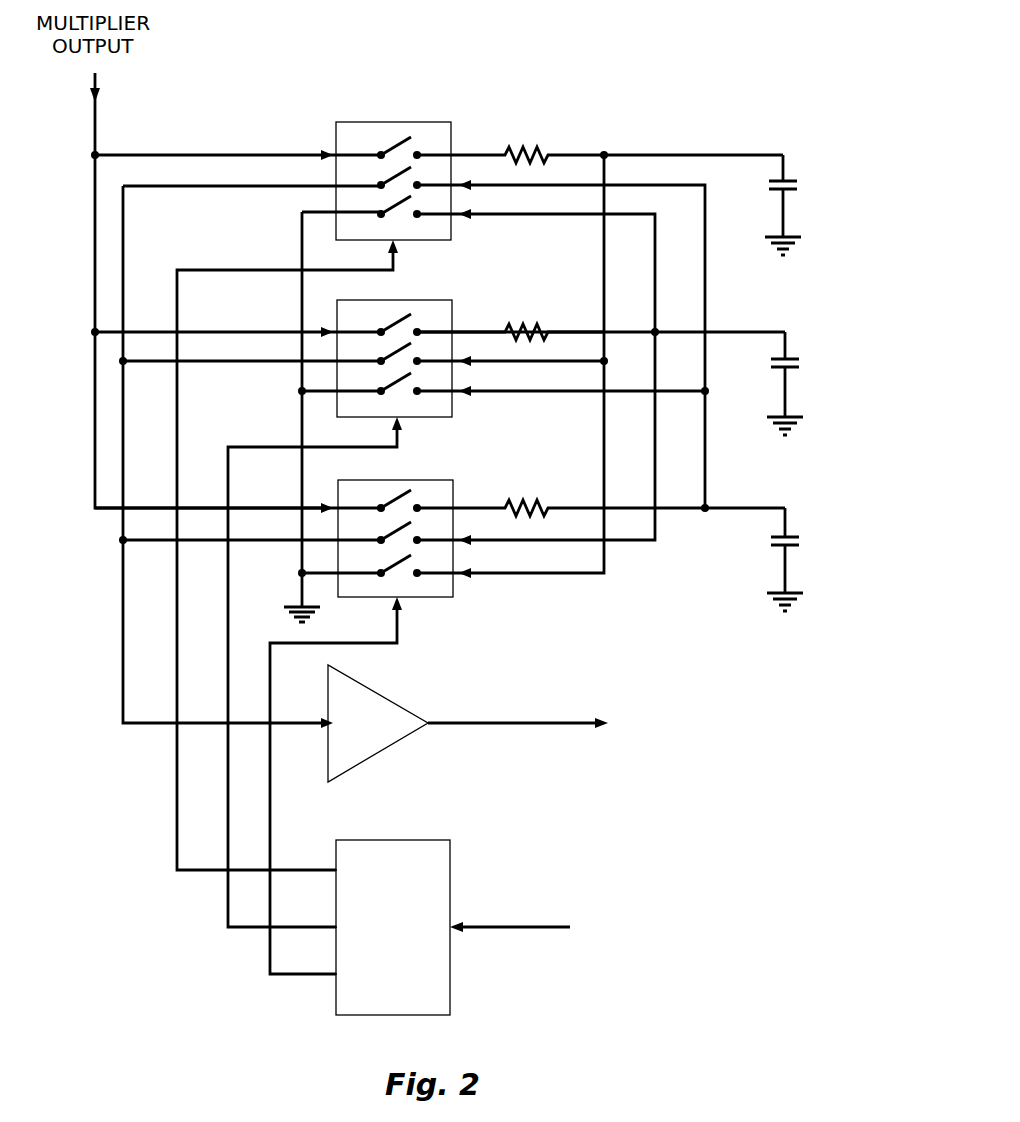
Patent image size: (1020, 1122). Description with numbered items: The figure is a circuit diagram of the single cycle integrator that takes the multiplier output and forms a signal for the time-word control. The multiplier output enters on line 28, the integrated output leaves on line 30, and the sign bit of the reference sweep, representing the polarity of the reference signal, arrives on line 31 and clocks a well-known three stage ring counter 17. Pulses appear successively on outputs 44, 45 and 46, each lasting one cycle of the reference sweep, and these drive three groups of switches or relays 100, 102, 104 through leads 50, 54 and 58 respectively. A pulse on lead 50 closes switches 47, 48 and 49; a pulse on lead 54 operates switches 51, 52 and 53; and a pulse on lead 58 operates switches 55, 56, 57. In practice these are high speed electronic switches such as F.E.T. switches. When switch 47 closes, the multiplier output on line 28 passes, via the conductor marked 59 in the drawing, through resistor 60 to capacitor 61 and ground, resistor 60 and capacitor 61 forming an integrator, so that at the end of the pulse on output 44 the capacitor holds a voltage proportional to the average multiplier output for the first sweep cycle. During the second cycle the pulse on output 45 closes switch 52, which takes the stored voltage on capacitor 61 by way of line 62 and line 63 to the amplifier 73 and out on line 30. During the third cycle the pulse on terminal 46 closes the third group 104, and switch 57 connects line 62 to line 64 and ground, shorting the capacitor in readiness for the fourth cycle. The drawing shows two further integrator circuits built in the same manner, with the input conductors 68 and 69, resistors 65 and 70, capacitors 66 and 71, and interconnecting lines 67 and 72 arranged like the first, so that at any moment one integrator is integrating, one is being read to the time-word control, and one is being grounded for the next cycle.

The three stage ring counter 17 is at (393, 927).
The line 28 is at (107, 66).
The line 30 is at (472, 722).
The line 31 is at (497, 930).
The output 44 is at (352, 870).
The output 45 is at (336, 927).
The output 46 is at (352, 976).
The switch 47 is at (381, 153).
The switch 48 is at (381, 183).
The switch 49 is at (381, 212).
The lead 50 is at (360, 270).
The switch 51 is at (381, 330).
The switch 52 is at (381, 359).
The switch 53 is at (381, 389).
The lead 54 is at (366, 447).
The switch 55 is at (381, 506).
The switch 56 is at (381, 538).
The switch 57 is at (381, 571).
The lead 58 is at (398, 642).
The input conductor 59 is at (228, 153).
The resistor 60 is at (527, 151).
The capacitor 61 is at (790, 185).
The line 62 is at (688, 154).
The line 63 is at (199, 187).
The line 64 is at (301, 212).
The resistor 65 is at (522, 330).
The capacitor 66 is at (792, 365).
The conductor 67 is at (525, 214).
The input conductor 68 is at (263, 330).
The input conductor 69 is at (284, 506).
The resistor 70 is at (522, 506).
The capacitor 71 is at (792, 541).
The conductor 72 is at (530, 185).
The amplifier 73 is at (378, 723).
The group of switches 100 is at (452, 122).
The group of switches 102 is at (453, 300).
The group of switches 104 is at (454, 480).